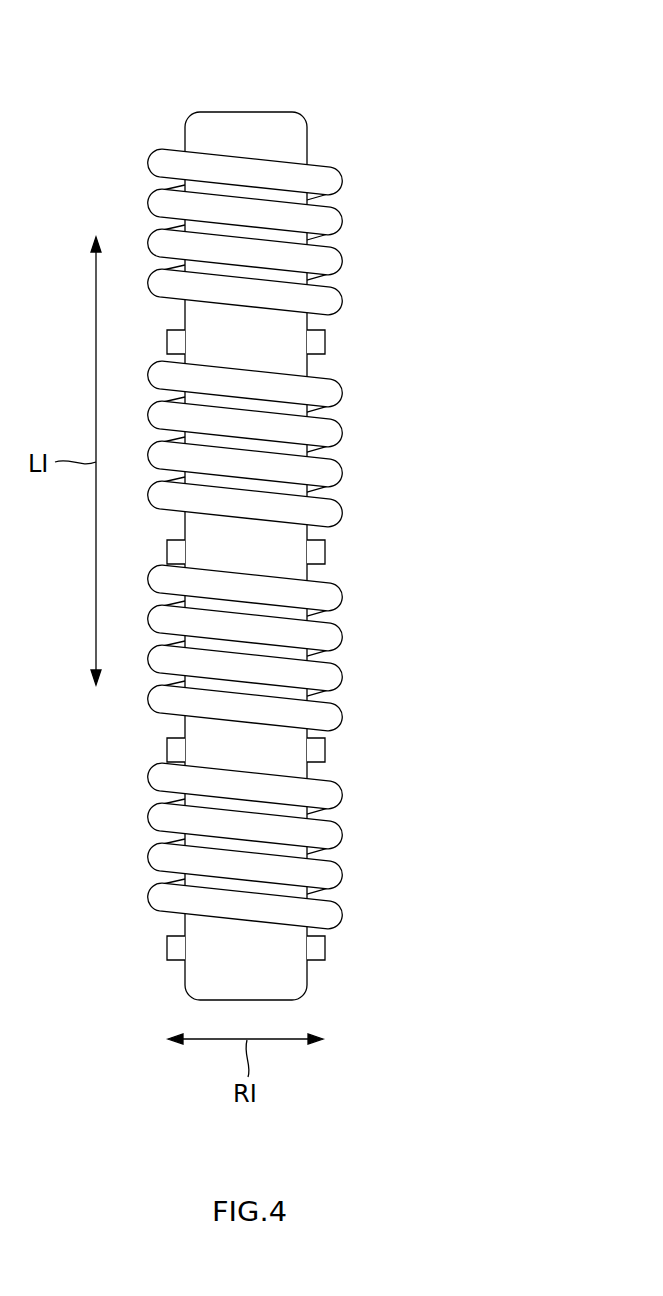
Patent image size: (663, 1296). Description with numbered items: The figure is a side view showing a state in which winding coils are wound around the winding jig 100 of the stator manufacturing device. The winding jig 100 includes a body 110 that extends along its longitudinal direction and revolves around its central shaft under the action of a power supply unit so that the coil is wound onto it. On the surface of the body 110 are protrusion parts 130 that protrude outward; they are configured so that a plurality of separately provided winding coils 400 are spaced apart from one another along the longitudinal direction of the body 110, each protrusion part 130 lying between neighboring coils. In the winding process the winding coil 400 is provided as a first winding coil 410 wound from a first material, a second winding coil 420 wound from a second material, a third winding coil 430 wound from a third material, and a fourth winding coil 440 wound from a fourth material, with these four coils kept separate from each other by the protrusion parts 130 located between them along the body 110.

The winding jig 100 is at (309, 67).
The body 110 is at (243, 122).
The protrusion part 130 is at (318, 341).
The winding coil 400 is at (433, 181).
The first winding coil 410 is at (345, 181).
The second winding coil 420 is at (345, 435).
The third winding coil 430 is at (345, 637).
The fourth winding coil 440 is at (345, 833).